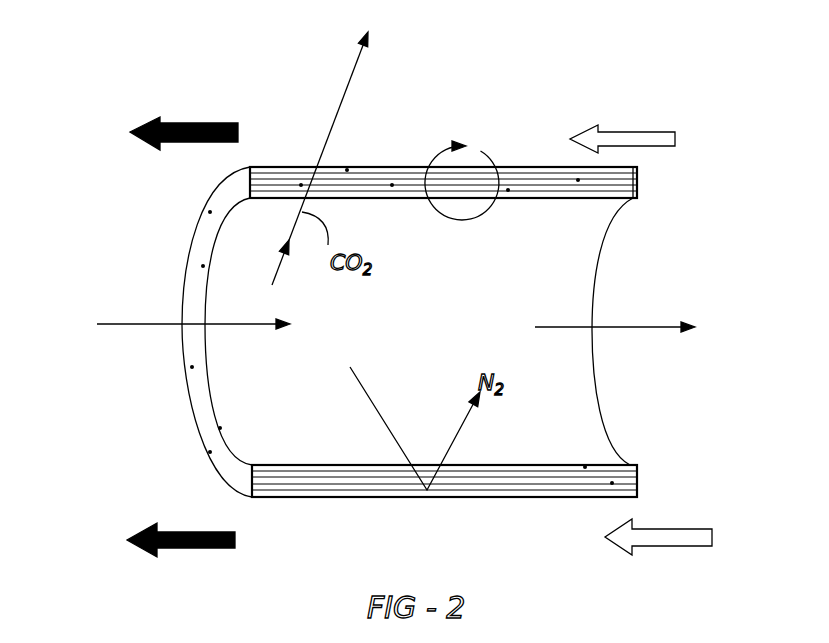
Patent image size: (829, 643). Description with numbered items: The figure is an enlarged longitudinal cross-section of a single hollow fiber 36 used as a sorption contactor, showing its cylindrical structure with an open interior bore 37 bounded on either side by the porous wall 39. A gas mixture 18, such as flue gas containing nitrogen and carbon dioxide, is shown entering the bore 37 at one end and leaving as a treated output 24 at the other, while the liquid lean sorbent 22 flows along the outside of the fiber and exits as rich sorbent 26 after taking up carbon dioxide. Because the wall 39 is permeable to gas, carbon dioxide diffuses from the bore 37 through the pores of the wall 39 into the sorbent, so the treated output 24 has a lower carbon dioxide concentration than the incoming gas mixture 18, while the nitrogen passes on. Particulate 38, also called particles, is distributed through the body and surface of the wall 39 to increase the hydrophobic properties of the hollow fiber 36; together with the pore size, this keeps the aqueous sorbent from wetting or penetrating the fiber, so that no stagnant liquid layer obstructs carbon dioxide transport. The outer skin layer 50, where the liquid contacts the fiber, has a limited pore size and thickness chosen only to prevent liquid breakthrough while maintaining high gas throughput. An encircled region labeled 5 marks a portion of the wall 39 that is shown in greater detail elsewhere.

The detail circle 5 is at (497, 164).
The gas mixture 18 is at (143, 327).
The lean sorbent 22 is at (626, 132).
The treated output 24 is at (636, 328).
The rich sorbent 26 is at (205, 122).
The hollow fiber 36 is at (83, 193).
The interior bore 37 is at (530, 250).
The particulate 38 is at (301, 185).
The wall 39 is at (640, 178).
The skin layer 50 is at (412, 167).